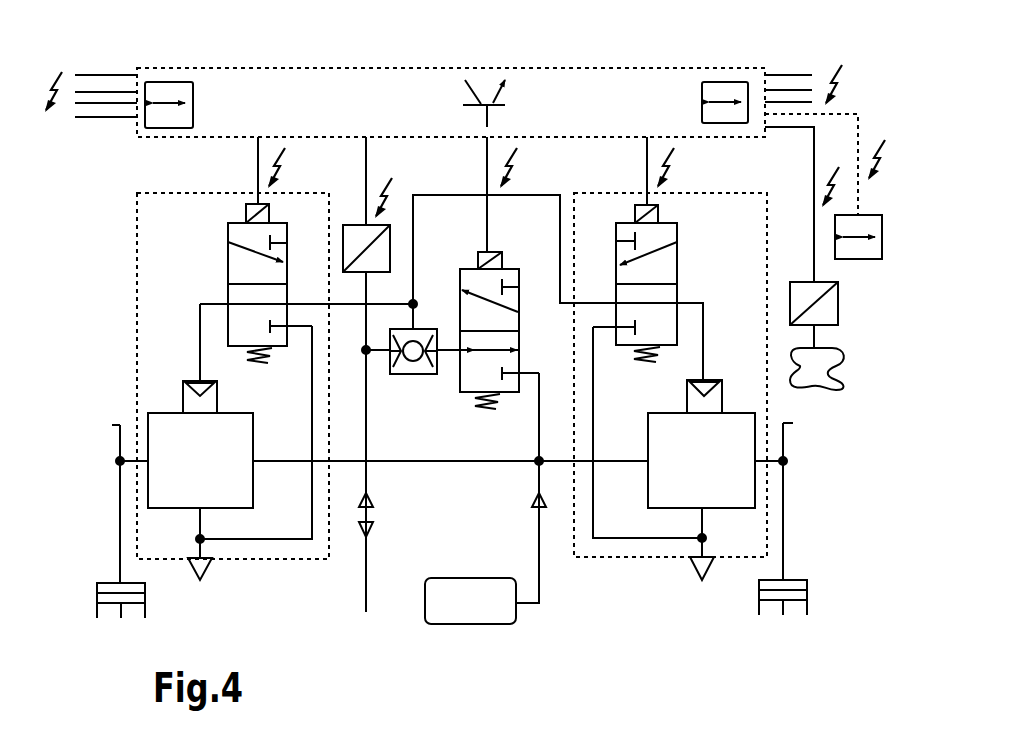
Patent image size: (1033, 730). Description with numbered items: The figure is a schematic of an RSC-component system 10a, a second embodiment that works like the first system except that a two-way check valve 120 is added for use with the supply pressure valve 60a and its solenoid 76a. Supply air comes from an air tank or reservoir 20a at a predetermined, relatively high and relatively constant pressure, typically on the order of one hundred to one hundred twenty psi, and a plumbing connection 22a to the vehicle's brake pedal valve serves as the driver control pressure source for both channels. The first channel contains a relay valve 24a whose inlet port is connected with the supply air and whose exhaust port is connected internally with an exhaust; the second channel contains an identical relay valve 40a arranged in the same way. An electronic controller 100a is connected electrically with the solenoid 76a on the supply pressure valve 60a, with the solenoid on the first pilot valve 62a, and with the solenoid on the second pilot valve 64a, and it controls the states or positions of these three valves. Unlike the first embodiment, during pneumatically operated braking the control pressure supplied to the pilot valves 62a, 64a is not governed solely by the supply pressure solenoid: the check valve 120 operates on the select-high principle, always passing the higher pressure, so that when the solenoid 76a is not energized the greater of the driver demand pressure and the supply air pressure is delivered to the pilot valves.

The RSC-component system 10a is at (388, 638).
The air supply 20a is at (492, 614).
The plumbing connection 22a is at (365, 582).
The relay valve 24a is at (727, 478).
The relay valve 40a is at (230, 478).
The supply pressure valve 60a is at (456, 274).
The first pilot valve 62a is at (679, 268).
The second pilot valve 64a is at (227, 263).
The solenoid 76a is at (505, 257).
The electronic controller 100a is at (396, 66).
The 2-way check valve 120 is at (417, 378).